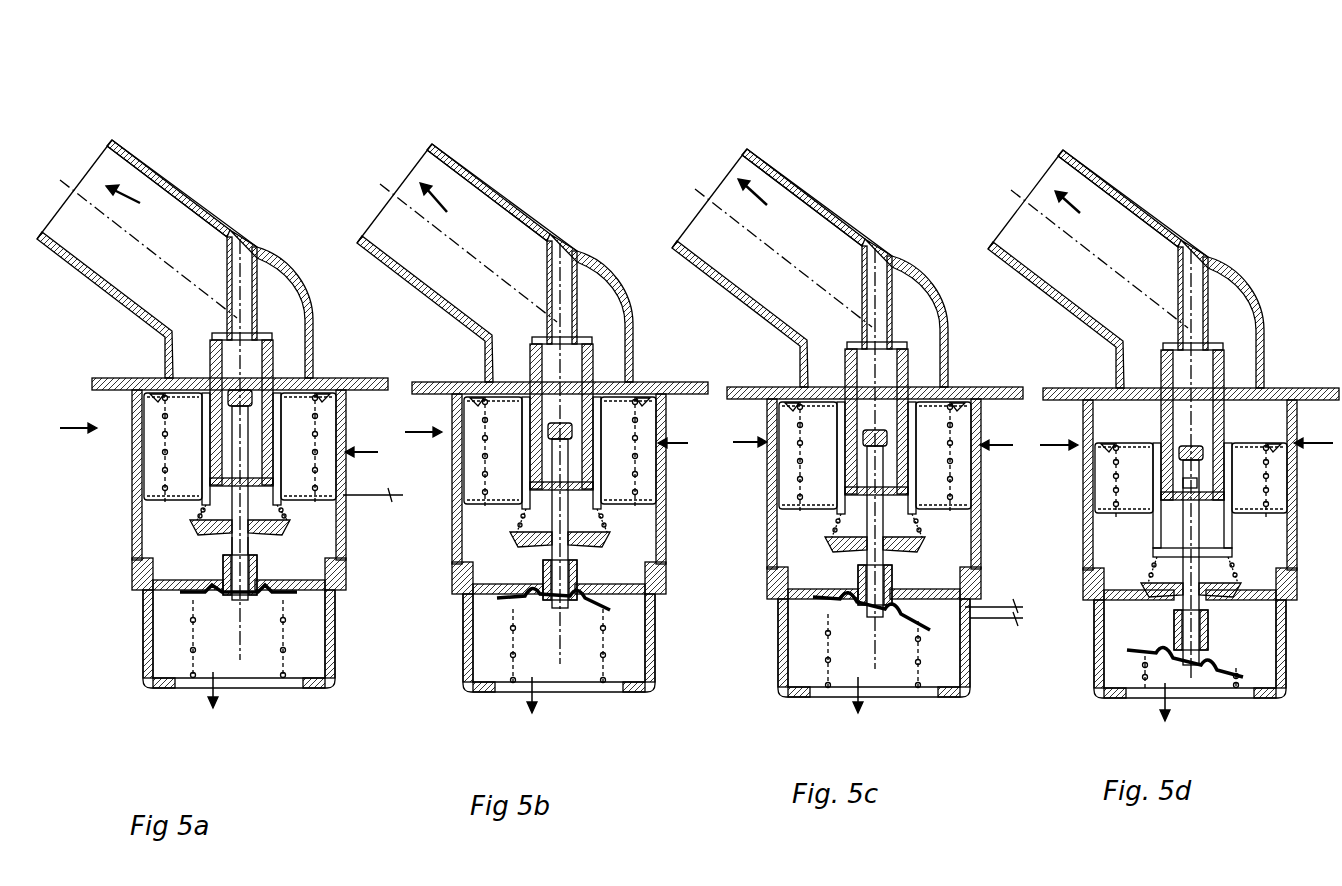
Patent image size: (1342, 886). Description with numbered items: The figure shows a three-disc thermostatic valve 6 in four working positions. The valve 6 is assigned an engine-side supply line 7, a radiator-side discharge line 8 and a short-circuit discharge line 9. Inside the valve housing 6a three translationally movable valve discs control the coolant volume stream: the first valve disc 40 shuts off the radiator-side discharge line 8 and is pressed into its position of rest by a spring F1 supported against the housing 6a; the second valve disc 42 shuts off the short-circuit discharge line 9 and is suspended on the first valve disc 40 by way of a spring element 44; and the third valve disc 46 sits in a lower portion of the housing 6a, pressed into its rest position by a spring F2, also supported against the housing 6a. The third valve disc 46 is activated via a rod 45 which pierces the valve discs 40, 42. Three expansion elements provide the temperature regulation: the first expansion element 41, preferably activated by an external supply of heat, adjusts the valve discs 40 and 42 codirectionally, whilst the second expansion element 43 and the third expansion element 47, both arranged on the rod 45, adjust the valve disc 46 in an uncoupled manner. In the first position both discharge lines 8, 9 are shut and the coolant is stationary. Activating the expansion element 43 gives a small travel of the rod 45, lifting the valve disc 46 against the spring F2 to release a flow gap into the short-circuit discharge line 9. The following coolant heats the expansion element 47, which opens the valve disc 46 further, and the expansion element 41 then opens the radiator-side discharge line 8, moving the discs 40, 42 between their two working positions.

In FIG. 5A, the three-disc thermostatic valve 6 is at (219, 417).
In FIG. 5B, the three-disc thermostatic valve 6 is at (532, 372).
In FIG. 5C, the three-disc thermostatic valve 6 is at (847, 374).
In FIG. 5D, the three-disc thermostatic valve 6 is at (1163, 383).
In FIG. 5A, the valve housing 6a is at (275, 227).
In FIG. 5A, the engine-side supply line 7 is at (72, 420).
In FIG. 5B, the engine-side supply line 7 is at (553, 419).
In FIG. 5C, the engine-side supply line 7 is at (875, 427).
In FIG. 5D, the engine-side supply line 7 is at (1188, 429).
In FIG. 5A, the radiator-side discharge line 8 is at (137, 204).
In FIG. 5B, the radiator-side discharge line 8 is at (438, 194).
In FIG. 5C, the radiator-side discharge line 8 is at (759, 194).
In FIG. 5D, the radiator-side discharge line 8 is at (1073, 198).
In FIG. 5A, the short-circuit discharge line 9 is at (221, 701).
In FIG. 5B, the short-circuit discharge line 9 is at (541, 703).
In FIG. 5C, the short-circuit discharge line 9 is at (867, 704).
In FIG. 5D, the short-circuit discharge line 9 is at (1173, 710).
In FIG. 5A, the first valve disc 40 is at (197, 412).
In FIG. 5A, the first expansion element 41 is at (262, 352).
In FIG. 5A, the second valve disc 42 is at (230, 538).
In FIG. 5A, the second expansion element 43 is at (250, 413).
In FIG. 5A, the spring element 44 is at (203, 512).
In FIG. 5A, the rod 45 is at (246, 541).
In FIG. 5A, the third valve disc 46 is at (212, 597).
In FIG. 5A, the third expansion element 47 is at (257, 567).
In FIG. 5A, the spring F1 is at (152, 468).
In FIG. 5A, the spring F2 is at (185, 650).